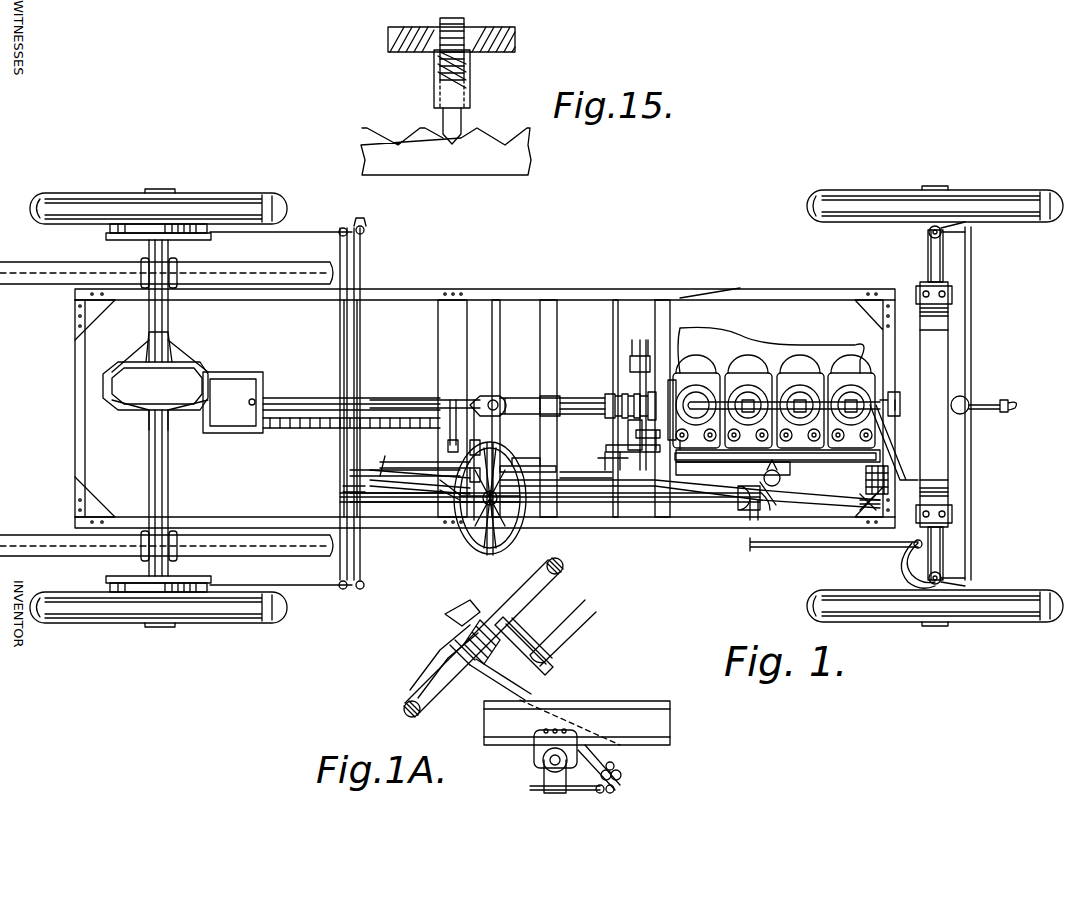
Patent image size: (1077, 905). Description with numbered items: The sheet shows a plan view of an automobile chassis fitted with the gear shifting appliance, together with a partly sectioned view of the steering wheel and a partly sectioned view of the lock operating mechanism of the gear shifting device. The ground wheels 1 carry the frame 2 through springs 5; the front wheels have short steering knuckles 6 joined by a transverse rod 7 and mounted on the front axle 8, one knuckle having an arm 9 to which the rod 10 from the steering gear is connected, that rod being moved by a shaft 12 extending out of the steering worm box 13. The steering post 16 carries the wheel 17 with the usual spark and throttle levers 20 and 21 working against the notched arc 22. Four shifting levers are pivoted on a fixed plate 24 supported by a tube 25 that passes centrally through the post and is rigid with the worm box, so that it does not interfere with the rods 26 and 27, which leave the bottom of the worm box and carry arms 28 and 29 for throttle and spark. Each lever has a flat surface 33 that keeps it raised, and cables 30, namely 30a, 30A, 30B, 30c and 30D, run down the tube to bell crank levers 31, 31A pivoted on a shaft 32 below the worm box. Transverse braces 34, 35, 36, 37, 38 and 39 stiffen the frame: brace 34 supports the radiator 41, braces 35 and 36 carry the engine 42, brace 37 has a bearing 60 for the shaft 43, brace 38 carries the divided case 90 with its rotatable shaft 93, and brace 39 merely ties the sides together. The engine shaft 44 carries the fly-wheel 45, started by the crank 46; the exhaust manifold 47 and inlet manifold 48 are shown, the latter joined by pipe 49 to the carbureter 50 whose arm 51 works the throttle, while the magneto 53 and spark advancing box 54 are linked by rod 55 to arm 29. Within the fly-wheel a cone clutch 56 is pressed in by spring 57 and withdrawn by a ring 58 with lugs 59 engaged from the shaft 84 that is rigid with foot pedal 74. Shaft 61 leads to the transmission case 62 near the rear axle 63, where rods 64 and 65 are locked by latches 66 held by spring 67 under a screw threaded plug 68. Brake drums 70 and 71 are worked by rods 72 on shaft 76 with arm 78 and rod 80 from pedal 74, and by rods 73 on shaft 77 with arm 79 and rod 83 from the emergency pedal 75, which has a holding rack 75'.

In FIG. 1, the ground wheels 1 is at (208, 203).
In FIG. 1, the frame 2 is at (572, 288).
In FIG. 1, the springs 5 is at (45, 275).
In FIG. 1, the steering knuckles 6 is at (948, 234).
In FIG. 1, the transverse rod 7 is at (972, 458).
In FIG. 1, the front axle 8 is at (928, 268).
In FIG. 1, the arm 9 is at (912, 568).
In FIG. 1, the rod 10 is at (845, 544).
In FIG. 1, the shaft 12 is at (748, 540).
In FIG. 1, the steering worm box 13 is at (752, 512).
In FIG. 1, the steering post 16 is at (600, 505).
In FIG. 1A, the steering post 16 is at (546, 645).
In FIG. 1, the wheel 17 is at (452, 495).
In FIG. 1, the spark lever 20 is at (493, 555).
In FIG. 1, the throttle lever 21 is at (522, 528).
In FIG. 1, the notched arc 22 is at (456, 535).
In FIG. 1, the fixed plate 24 is at (460, 486).
In FIG. 1A, the fixed plate 24 is at (458, 652).
In FIG. 1A, the tube 25 is at (486, 612).
In FIG. 1A, the rod 26 is at (530, 637).
In FIG. 1A, the rod 27 is at (462, 668).
In FIG. 1, the arm 28 is at (676, 480).
In FIG. 1, the arm 29 is at (772, 497).
In FIG. 1, the cables 30 is at (605, 472).
In FIG. 1A, the cable 30a is at (510, 692).
In FIG. 1A, the cable 30A is at (610, 764).
In FIG. 1, the cable 30B is at (642, 502).
In FIG. 1A, the cable 30B is at (622, 775).
In FIG. 1, the cable 30c is at (535, 458).
In FIG. 1, the cable 30D is at (440, 472).
In FIG. 1A, the bell crank levers 31 is at (596, 792).
In FIG. 1A, the bell crank lever 31A is at (614, 790).
In FIG. 1A, the shaft 32 is at (545, 772).
In FIG. 1A, the flat surface 33 is at (478, 615).
In FIG. 1, the transverse brace 34 is at (948, 335).
In FIG. 1, the transverse brace 35 is at (880, 332).
In FIG. 1, the transverse brace 36 is at (700, 288).
In FIG. 1, the transverse brace 37 is at (552, 340).
In FIG. 1, the transverse brace 38 is at (458, 355).
In FIG. 1, the transverse brace 39 is at (75, 462).
In FIG. 1, the radiator 41 is at (948, 372).
In FIG. 1, the engine 42 is at (706, 380).
In FIG. 1, the shaft 43 is at (575, 398).
In FIG. 1, the shaft 44 is at (895, 394).
In FIG. 1, the fly-wheel 45 is at (634, 460).
In FIG. 1, the crank 46 is at (975, 412).
In FIG. 1, the exhaust manifold 47 is at (744, 372).
In FIG. 1, the inlet manifold 48 is at (875, 440).
In FIG. 1, the pipe 49 is at (760, 458).
In FIG. 1, the carbureter 50 is at (780, 478).
In FIG. 1, the arm 51 is at (763, 480).
In FIG. 1, the magneto 53 is at (866, 478).
In FIG. 1, the spark advancing box 54 is at (880, 500).
In FIG. 1, the rod 55 is at (860, 502).
In FIG. 1, the cone clutch 56 is at (640, 360).
In FIG. 1, the spring 57 is at (626, 428).
In FIG. 1, the ring 58 is at (640, 440).
In FIG. 1, the lugs 59 is at (628, 392).
In FIG. 1, the bearing 60 is at (536, 398).
In FIG. 1, the shaft 61 is at (396, 398).
In FIG. 15, the case 62 is at (400, 55).
In FIG. 1, the case 62 is at (240, 390).
In FIG. 1, the rear axle 63 is at (172, 328).
In FIG. 15, the rod 64 is at (462, 165).
In FIG. 1, the rod 64 is at (306, 428).
In FIG. 1, the rod 65 is at (290, 400).
In FIG. 15, the latches 66 is at (445, 118).
In FIG. 15, the spring 67 is at (466, 72).
In FIG. 15, the screw threaded plug 68 is at (445, 22).
In FIG. 1, the screw threaded plug 68 is at (250, 402).
In FIG. 1, the brake drum 70 is at (112, 585).
In FIG. 1, the brake drum 71 is at (112, 230).
In FIG. 1, the brake rods 72 is at (326, 232).
In FIG. 1, the brake rods 73 is at (364, 585).
In FIG. 1A, the foot pedal 74 is at (562, 574).
In FIG. 1A, the foot pedal 75 is at (497, 635).
In FIG. 1, the rack 75' is at (690, 384).
In FIG. 1, the shaft 76 is at (342, 500).
In FIG. 1, the shaft 77 is at (357, 338).
In FIG. 1, the lever arm 78 is at (366, 480).
In FIG. 1, the lever arm 79 is at (368, 472).
In FIG. 1, the rod 80 is at (448, 462).
In FIG. 1, the rod 83 is at (478, 445).
In FIG. 1, the shaft 84 is at (634, 354).
In FIG. 1, the divided case 90 is at (446, 483).
In FIG. 1, the shaft 93 is at (452, 398).